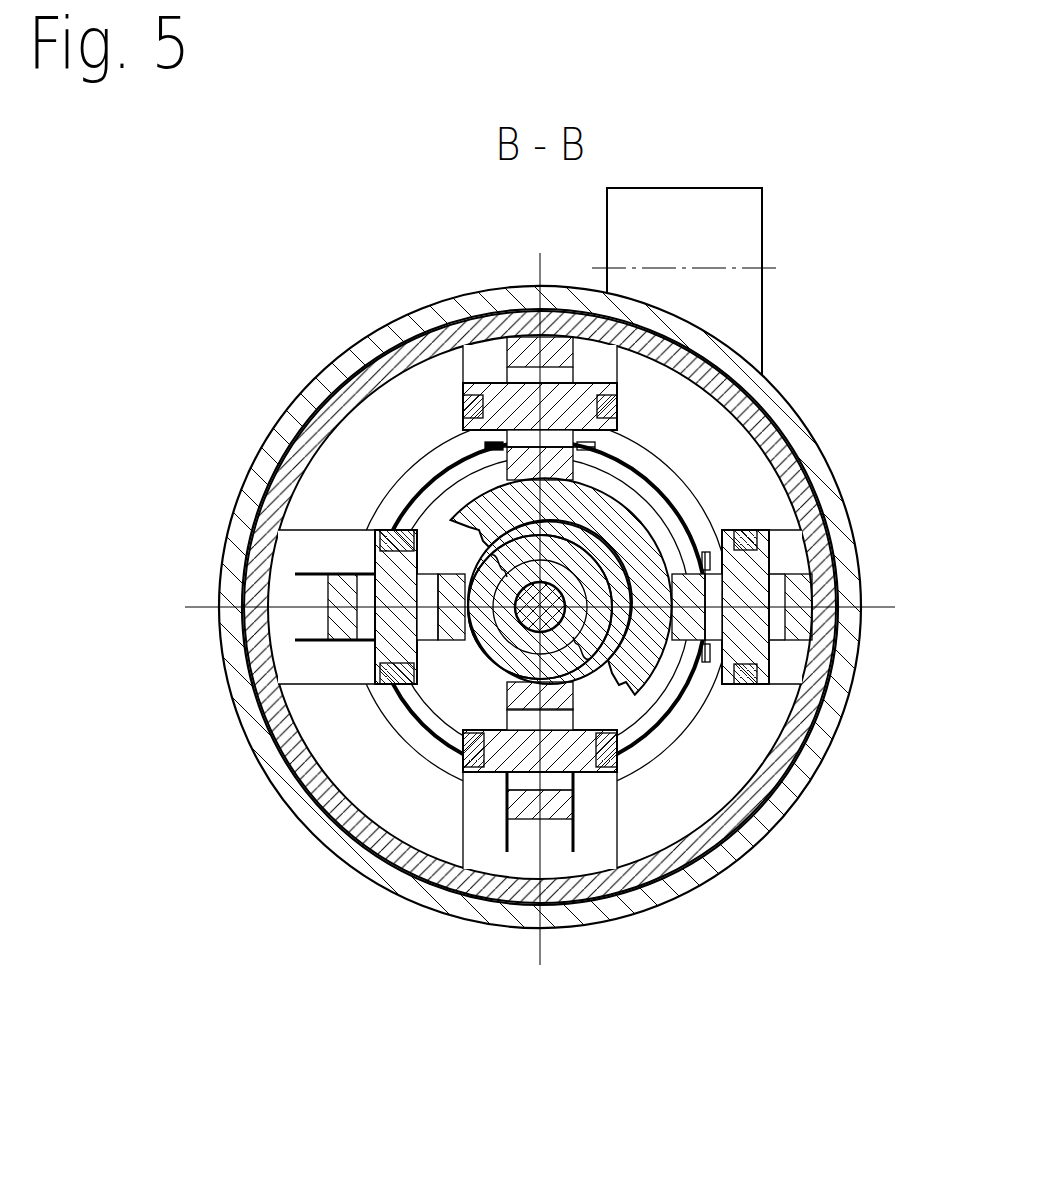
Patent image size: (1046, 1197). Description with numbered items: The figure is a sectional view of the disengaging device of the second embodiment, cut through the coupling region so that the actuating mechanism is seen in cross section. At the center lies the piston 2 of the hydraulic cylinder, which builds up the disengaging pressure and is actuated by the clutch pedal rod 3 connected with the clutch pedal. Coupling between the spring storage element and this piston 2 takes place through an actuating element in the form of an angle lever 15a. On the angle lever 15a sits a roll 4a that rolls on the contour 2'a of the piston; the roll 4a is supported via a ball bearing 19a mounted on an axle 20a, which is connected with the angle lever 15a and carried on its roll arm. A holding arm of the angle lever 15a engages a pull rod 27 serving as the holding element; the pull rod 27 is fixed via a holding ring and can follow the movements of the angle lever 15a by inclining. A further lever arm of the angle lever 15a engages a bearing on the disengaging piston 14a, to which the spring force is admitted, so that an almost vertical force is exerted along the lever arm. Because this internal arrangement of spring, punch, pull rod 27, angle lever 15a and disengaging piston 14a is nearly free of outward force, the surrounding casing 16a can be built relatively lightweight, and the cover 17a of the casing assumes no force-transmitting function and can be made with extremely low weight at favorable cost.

The piston 2 is at (701, 436).
The contour 2'a is at (688, 673).
The clutch pedal rod 3 is at (528, 617).
The roll 4a is at (525, 810).
The disengaging piston 14a is at (724, 458).
The angle lever 15a is at (598, 813).
The casing 16a is at (347, 365).
The cover 17a is at (299, 447).
The ball bearing 19a is at (553, 786).
The axle 20a is at (503, 753).
The pull rod 27 is at (461, 265).